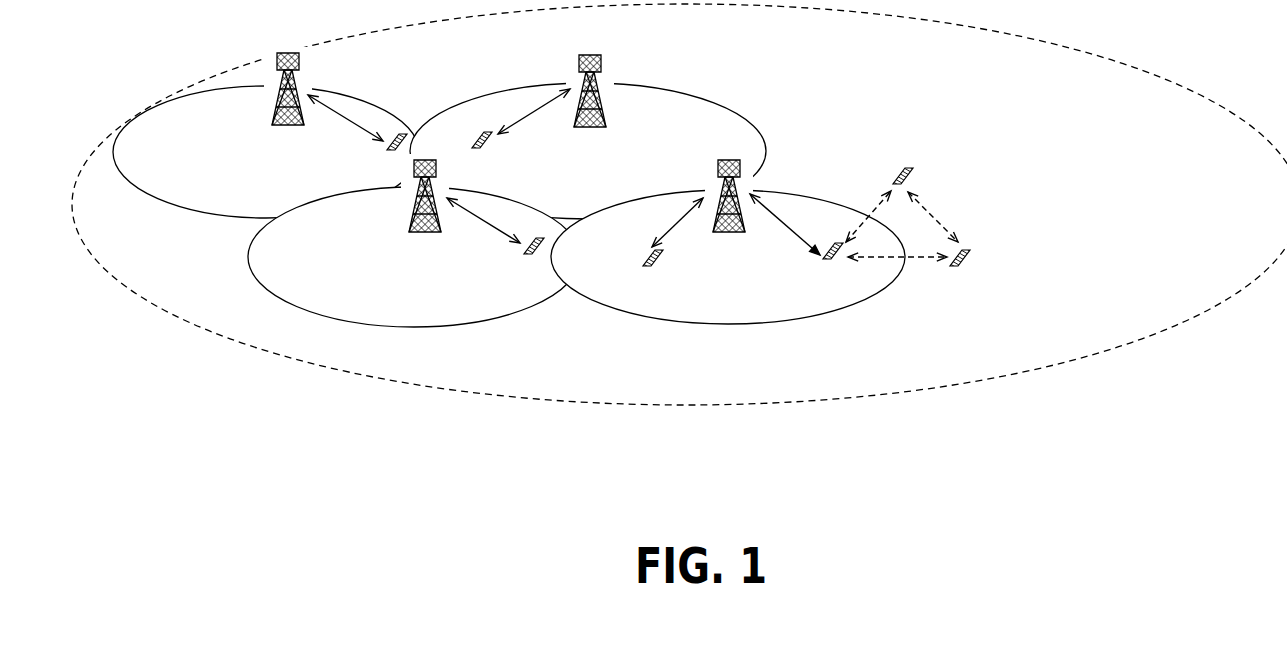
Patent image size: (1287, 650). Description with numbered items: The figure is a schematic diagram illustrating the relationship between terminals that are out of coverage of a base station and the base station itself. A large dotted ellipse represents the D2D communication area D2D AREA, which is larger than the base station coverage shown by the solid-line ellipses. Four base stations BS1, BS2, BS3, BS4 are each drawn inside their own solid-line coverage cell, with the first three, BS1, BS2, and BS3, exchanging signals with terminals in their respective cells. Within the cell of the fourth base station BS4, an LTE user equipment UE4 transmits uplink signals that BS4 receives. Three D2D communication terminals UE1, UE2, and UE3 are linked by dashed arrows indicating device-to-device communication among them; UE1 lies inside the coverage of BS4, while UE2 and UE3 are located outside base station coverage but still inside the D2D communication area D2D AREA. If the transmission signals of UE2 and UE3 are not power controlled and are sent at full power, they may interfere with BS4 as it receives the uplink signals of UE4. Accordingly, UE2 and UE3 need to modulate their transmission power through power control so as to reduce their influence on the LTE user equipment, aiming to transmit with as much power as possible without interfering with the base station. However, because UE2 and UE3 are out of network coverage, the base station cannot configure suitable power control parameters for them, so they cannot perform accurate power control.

The base station BS1 is at (284, 102).
The base station BS2 is at (591, 109).
The base station BS3 is at (422, 208).
The base station BS4 is at (729, 213).
The D2D communication terminal UE1 is at (831, 266).
The D2D communication terminal UE2 is at (945, 173).
The D2D communication terminal UE3 is at (961, 271).
The LTE UE UE4 is at (644, 271).
The D2D communication area D2D AREA is at (1180, 370).